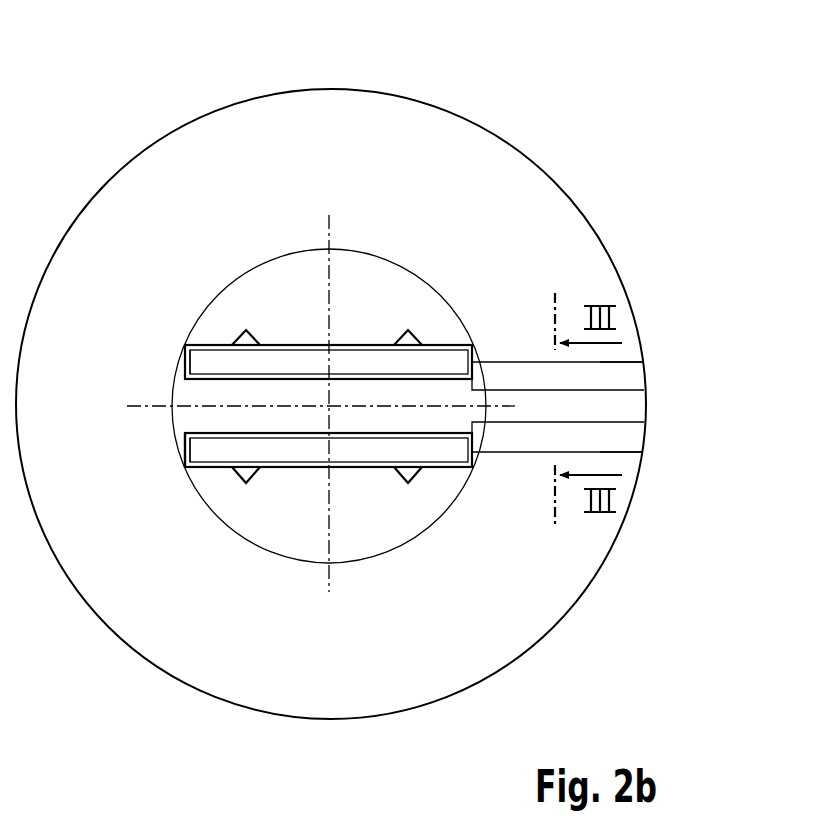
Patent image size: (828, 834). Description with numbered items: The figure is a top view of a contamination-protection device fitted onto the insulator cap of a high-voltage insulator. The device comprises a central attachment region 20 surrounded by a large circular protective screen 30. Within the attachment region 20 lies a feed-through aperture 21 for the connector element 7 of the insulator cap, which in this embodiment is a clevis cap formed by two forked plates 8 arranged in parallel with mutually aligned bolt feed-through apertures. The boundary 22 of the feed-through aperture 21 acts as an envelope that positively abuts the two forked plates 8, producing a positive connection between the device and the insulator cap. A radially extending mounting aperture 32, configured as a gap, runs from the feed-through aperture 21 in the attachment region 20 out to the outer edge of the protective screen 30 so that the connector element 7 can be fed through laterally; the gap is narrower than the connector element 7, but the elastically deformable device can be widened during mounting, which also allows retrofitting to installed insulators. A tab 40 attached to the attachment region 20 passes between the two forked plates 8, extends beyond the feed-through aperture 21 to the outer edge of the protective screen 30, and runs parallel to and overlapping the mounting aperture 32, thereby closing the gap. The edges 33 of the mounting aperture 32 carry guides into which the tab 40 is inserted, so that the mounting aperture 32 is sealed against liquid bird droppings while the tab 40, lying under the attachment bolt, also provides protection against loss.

The protective screen 30 is at (378, 148).
The tab 40 is at (287, 395).
The attachment region 20 is at (355, 337).
The feed-through aperture 21 is at (411, 337).
The boundary 22 is at (217, 345).
The forked plates 8 is at (198, 363).
The connector element 7 is at (223, 464).
The mounting aperture 32 is at (627, 407).
The edges 33 is at (627, 382).